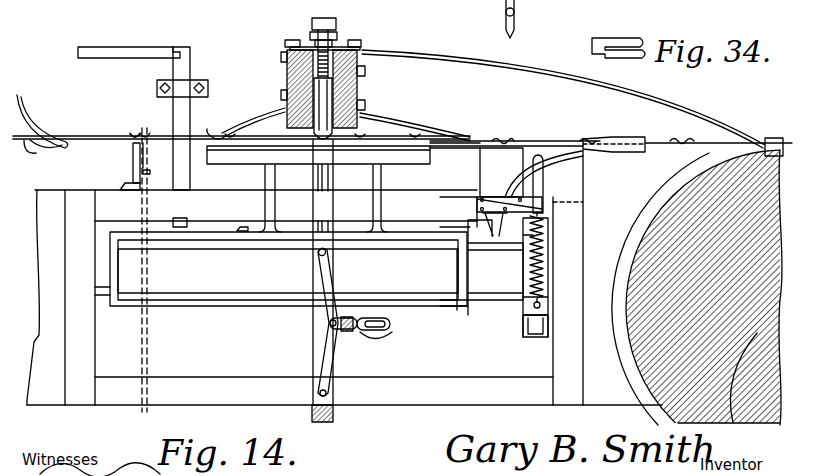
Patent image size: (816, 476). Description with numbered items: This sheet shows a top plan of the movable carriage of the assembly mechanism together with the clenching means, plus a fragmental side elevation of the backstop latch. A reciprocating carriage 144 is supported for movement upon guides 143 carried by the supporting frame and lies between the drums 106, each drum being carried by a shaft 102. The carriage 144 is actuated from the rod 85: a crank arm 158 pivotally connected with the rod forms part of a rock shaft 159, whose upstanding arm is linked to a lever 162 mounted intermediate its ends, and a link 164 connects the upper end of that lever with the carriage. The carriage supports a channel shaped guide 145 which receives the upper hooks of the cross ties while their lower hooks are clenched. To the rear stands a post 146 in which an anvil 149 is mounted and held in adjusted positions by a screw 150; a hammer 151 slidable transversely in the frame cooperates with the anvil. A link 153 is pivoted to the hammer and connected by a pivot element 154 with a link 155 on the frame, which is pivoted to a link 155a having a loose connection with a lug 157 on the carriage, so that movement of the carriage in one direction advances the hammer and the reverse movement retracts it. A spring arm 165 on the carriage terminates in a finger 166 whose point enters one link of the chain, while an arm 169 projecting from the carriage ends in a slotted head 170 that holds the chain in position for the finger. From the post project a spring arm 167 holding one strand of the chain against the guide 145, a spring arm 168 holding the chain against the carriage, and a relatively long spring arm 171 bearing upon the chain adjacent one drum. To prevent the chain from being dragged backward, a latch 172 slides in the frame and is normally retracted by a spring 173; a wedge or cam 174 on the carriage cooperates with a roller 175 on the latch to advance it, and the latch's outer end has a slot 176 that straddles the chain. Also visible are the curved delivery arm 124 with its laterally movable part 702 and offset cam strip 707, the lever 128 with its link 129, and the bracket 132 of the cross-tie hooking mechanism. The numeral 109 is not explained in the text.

In FIG. 14, the rod 85 is at (98, 48).
In FIG. 14, the crank arm 158 is at (190, 60).
In FIG. 14, the rock shaft 159 is at (186, 116).
In FIG. 14, the curved delivery arm 124 is at (32, 96).
In FIG. 14, the laterally movable part 702 is at (38, 128).
In FIG. 14, the offset cam strip 707 is at (53, 161).
In FIG. 14, the bracket 132 is at (135, 173).
In FIG. 14, the lever 128 is at (135, 152).
In FIG. 14, the link 129 is at (148, 166).
In FIG. 14, the post 146 is at (355, 58).
In FIG. 14, the screw 150 is at (318, 18).
In FIG. 14, the anvil 149 is at (316, 96).
In FIG. 14, the spring arm 167 is at (226, 128).
In FIG. 14, the spring arm 168 is at (398, 124).
In FIG. 14, the relatively long spring arm 171 is at (462, 56).
In FIG. 14, the lever 162 is at (516, 25).
In FIG. 14, the channel shaped guide 145 is at (438, 157).
In FIG. 14, the spring arm 165 is at (518, 150).
In FIG. 14, the finger 166 is at (588, 140).
In FIG. 14, the head 170 is at (640, 134).
In FIG. 14, the drum 106 is at (735, 148).
In FIG. 14, the wedge or cam 174 is at (485, 195).
In FIG. 14, the latch 172 is at (543, 183).
In FIG. 34, the latch 172 is at (601, 40).
In FIG. 14, the arm 169 is at (545, 160).
In FIG. 14, the roller 175 is at (612, 215).
In FIG. 14, the spring 173 is at (547, 265).
In FIG. 14, the wheel 109 is at (668, 184).
In FIG. 14, the shaft 102 is at (735, 423).
In FIG. 14, the hammer 151 is at (318, 270).
In FIG. 14, the link 164 is at (180, 228).
In FIG. 14, the reciprocating carriage 144 is at (192, 308).
In FIG. 14, the link 153 is at (331, 267).
In FIG. 14, the pivot element 154 is at (330, 323).
In FIG. 14, the link 155a is at (382, 333).
In FIG. 14, the link 155 is at (335, 358).
In FIG. 14, the lug 157 is at (388, 312).
In FIG. 14, the guide 143 is at (493, 315).
In FIG. 34, the slot 176 is at (648, 40).